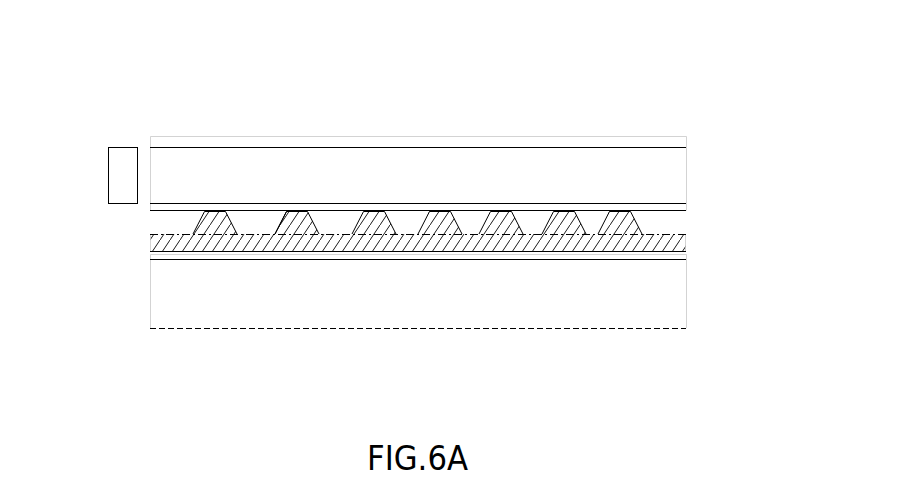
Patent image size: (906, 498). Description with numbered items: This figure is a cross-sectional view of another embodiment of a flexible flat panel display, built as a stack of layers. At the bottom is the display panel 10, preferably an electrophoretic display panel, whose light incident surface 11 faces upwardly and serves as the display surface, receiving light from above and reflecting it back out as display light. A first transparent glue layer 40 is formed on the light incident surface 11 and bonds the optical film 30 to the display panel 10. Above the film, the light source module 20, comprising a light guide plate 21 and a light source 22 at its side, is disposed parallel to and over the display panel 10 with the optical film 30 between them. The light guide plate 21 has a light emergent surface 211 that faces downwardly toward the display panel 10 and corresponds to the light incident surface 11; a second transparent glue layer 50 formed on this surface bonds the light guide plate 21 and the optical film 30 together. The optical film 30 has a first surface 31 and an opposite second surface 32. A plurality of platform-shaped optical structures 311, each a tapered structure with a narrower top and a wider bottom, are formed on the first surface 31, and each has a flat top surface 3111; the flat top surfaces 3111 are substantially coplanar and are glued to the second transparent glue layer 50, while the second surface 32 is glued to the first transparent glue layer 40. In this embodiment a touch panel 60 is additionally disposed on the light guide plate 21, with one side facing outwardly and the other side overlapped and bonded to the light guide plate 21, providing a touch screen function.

The display panel 10 is at (341, 316).
The light incident surface 11 is at (174, 258).
The light source module 20 is at (195, 50).
The light guide plate 21 is at (225, 162).
The light emergent surface 211 is at (425, 197).
The light source 22 is at (108, 175).
The optical film 30 is at (426, 210).
The first surface 31 is at (418, 152).
The platform-shaped optical structure 311 is at (300, 227).
The flat top surface 3111 is at (277, 232).
The second surface 32 is at (465, 253).
The first transparent glue layer 40 is at (152, 256).
The second transparent glue layer 50 is at (686, 207).
The touch panel 60 is at (582, 140).